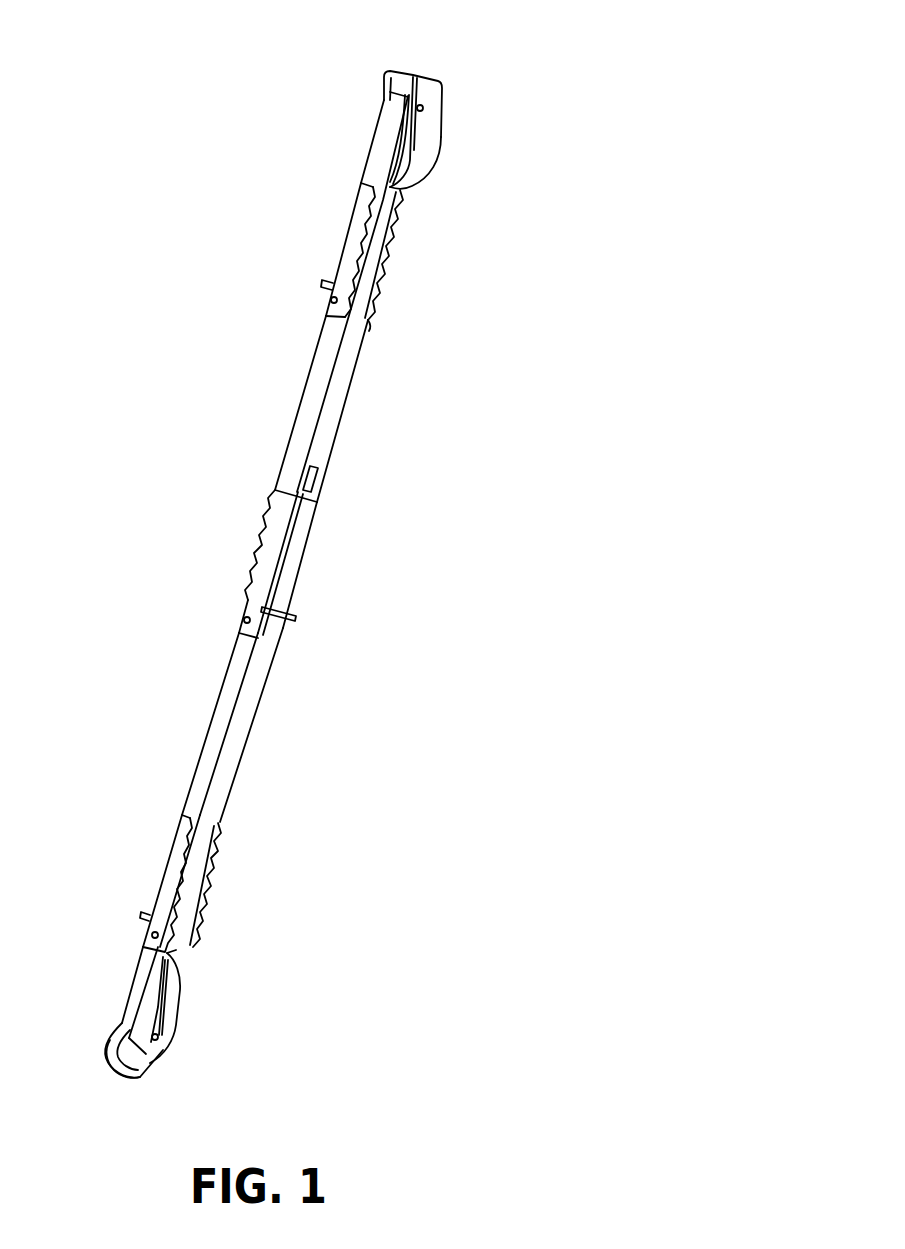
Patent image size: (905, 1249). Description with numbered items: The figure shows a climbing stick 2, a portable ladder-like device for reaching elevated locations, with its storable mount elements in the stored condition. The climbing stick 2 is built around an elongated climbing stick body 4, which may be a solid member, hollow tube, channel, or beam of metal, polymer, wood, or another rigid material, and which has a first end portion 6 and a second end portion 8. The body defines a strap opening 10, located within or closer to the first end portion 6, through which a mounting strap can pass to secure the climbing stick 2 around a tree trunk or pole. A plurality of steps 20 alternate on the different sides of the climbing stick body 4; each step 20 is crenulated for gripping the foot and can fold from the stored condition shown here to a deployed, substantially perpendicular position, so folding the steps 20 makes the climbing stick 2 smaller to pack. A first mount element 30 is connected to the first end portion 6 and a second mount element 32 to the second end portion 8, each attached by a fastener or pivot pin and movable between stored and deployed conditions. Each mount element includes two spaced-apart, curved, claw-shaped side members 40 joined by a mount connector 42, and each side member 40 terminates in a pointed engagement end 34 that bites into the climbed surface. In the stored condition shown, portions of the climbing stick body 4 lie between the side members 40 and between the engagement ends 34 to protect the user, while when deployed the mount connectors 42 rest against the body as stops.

The climbing stick 2 is at (188, 336).
The climbing stick body 4 is at (245, 703).
The first end portion 6 is at (333, 382).
The second end portion 8 is at (193, 916).
The strap opening 10 is at (320, 469).
The step 20 is at (361, 224).
The first mount element 30 is at (432, 89).
The second mount element 32 is at (180, 997).
The pointed engagement end 34 is at (416, 158).
The side member 40 is at (425, 133).
The mount connector 42 is at (122, 1072).